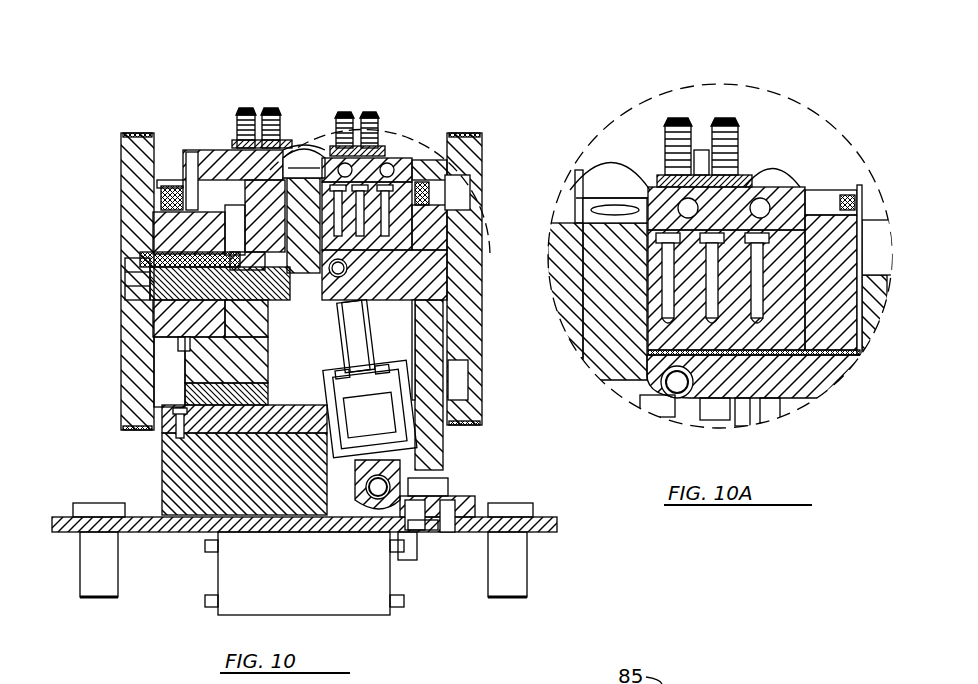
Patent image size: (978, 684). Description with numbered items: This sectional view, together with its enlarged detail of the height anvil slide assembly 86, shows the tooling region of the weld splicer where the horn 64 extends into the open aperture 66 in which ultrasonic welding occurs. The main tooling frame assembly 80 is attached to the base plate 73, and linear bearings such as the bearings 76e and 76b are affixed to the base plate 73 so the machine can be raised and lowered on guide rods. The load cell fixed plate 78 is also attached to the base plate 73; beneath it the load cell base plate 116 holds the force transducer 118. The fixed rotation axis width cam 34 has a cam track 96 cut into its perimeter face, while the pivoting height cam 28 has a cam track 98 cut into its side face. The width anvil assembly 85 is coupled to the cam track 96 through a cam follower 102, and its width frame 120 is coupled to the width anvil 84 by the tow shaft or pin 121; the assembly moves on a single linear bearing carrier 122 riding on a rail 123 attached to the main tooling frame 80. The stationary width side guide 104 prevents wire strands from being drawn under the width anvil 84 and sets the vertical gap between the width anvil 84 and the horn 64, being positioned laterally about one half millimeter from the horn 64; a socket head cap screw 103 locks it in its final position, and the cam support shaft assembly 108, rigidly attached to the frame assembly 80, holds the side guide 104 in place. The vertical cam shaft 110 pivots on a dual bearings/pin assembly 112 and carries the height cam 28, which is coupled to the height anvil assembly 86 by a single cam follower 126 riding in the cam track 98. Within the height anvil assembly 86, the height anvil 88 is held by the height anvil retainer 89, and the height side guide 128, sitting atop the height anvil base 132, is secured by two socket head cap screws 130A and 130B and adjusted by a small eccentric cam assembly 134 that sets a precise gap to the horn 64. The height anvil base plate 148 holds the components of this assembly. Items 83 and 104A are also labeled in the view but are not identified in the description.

In FIG. 10, the height cam 28 is at (478, 150).
In FIG. 10, the width cam 34 is at (135, 170).
In FIG. 10, the horn 64 is at (300, 175).
In FIG. 10A, the horn 64 is at (628, 247).
In FIG. 10, the open aperture 66 is at (308, 150).
In FIG. 10, the base plate 73 is at (540, 518).
In FIG. 10, the linear bearing 76e is at (100, 570).
In FIG. 10, the linear bearing 76b is at (520, 572).
In FIG. 10, the load cell fixed plate 78 is at (425, 500).
In FIG. 10, the main tooling frame assembly 80 is at (178, 472).
In FIG. 10, the fasteners 83 is at (258, 118).
In FIG. 10, the width anvil 84 is at (197, 150).
In FIG. 10, the width anvil assembly 85 is at (178, 140).
In FIG. 10, the height anvil slide assembly 86 is at (440, 133).
In FIG. 10A, the height anvil slide assembly 86 is at (783, 160).
In FIG. 10, the height anvil 88 is at (413, 138).
In FIG. 10A, the height anvil 88 is at (797, 167).
In FIG. 10, the height anvil retainer 89 is at (352, 156).
In FIG. 10A, the height anvil retainer 89 is at (718, 190).
In FIG. 10, the cam track 96 is at (200, 237).
In FIG. 10, the cam track 98 is at (460, 378).
In FIG. 10, the cam follower 102 is at (170, 215).
In FIG. 10, the socket head cap screw 103 is at (240, 280).
In FIG. 10, the width side guide 104 is at (213, 160).
In FIG. 10A, the width side guide 104 is at (560, 288).
In FIG. 10, the housing wall 104A is at (435, 320).
In FIG. 10, the cam support shaft assembly 108 is at (140, 282).
In FIG. 10, the vertical cam shaft 110 is at (440, 275).
In FIG. 10A, the vertical cam shaft 110 is at (828, 368).
In FIG. 10, the dual bearings/pin assembly 112 is at (338, 268).
In FIG. 10A, the dual bearings/pin assembly 112 is at (677, 385).
In FIG. 10, the load cell base plate 116 is at (435, 532).
In FIG. 10, the force transducer 118 is at (445, 505).
In FIG. 10, the width frame 120 is at (205, 370).
In FIG. 10, the tow shaft or pin 121 is at (190, 150).
In FIG. 10, the linear bearing carrier 122 is at (210, 395).
In FIG. 10, the rail 123 is at (170, 420).
In FIG. 10, the cam follower 126 is at (460, 192).
In FIG. 10A, the cam follower 126 is at (866, 240).
In FIG. 10, the height side guide 128 is at (478, 214).
In FIG. 10A, the height side guide 128 is at (760, 272).
In FIG. 10A, the socket head cap screw 130A is at (753, 300).
In FIG. 10A, the socket head cap screw 130B is at (660, 348).
In FIG. 10, the height anvil base 132 is at (447, 233).
In FIG. 10A, the height anvil base 132 is at (798, 320).
In FIG. 10A, the eccentric cam assembly 134 is at (717, 300).
In FIG. 10, the height anvil base plate 148 is at (440, 430).
In FIG. 10A, the height anvil base plate 148 is at (855, 352).